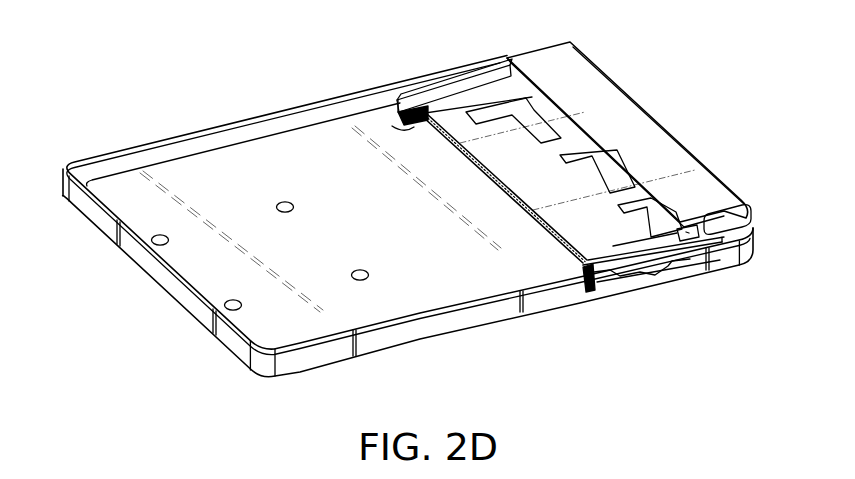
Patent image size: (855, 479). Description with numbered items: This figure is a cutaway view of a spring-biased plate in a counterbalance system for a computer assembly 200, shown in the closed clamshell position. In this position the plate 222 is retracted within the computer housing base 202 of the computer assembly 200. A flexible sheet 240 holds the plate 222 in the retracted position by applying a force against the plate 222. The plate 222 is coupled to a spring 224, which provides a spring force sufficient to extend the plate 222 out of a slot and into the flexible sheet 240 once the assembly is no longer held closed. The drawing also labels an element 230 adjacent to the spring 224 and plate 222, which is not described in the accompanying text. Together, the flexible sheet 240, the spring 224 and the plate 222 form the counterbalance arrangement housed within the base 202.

The computer assembly 200 is at (277, 125).
The computer housing base 202 is at (538, 307).
The plate 222 is at (538, 227).
The spring 224 is at (392, 126).
The bar 230 is at (440, 94).
The flexible sheet 240 is at (633, 120).